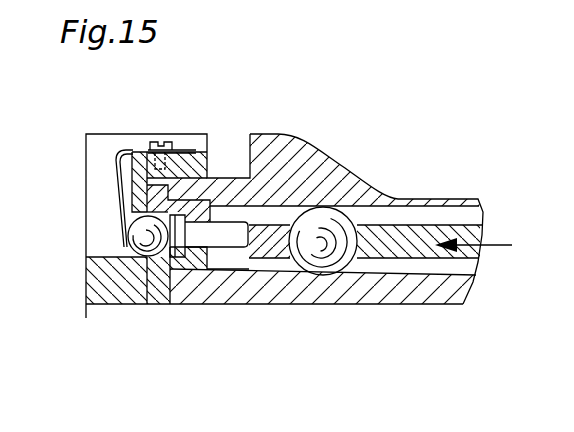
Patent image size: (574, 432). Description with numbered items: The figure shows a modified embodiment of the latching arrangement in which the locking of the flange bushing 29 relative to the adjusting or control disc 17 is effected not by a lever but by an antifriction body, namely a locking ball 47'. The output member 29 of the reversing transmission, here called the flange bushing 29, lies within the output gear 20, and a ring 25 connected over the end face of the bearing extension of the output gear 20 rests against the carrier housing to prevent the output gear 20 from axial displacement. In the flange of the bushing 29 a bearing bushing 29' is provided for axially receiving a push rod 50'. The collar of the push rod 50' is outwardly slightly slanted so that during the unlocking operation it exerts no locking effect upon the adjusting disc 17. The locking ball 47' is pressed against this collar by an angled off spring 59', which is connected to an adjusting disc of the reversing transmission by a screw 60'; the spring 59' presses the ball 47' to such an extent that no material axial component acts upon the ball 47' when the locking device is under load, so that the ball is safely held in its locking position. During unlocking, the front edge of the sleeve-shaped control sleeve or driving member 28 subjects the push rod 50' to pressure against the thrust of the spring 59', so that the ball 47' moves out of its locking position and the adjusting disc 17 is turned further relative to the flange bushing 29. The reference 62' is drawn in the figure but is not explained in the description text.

The control disc 17 is at (102, 178).
The output gear 20 is at (327, 178).
The ring 25 is at (345, 238).
The driving member 28 is at (395, 238).
The output member 29 is at (323, 318).
The bearing bushing 29' is at (178, 278).
The locking ball 47' is at (123, 299).
The push rod 50' is at (221, 166).
The angled off spring 59' is at (76, 206).
The screw 60' is at (169, 145).
The recess 62' is at (234, 337).